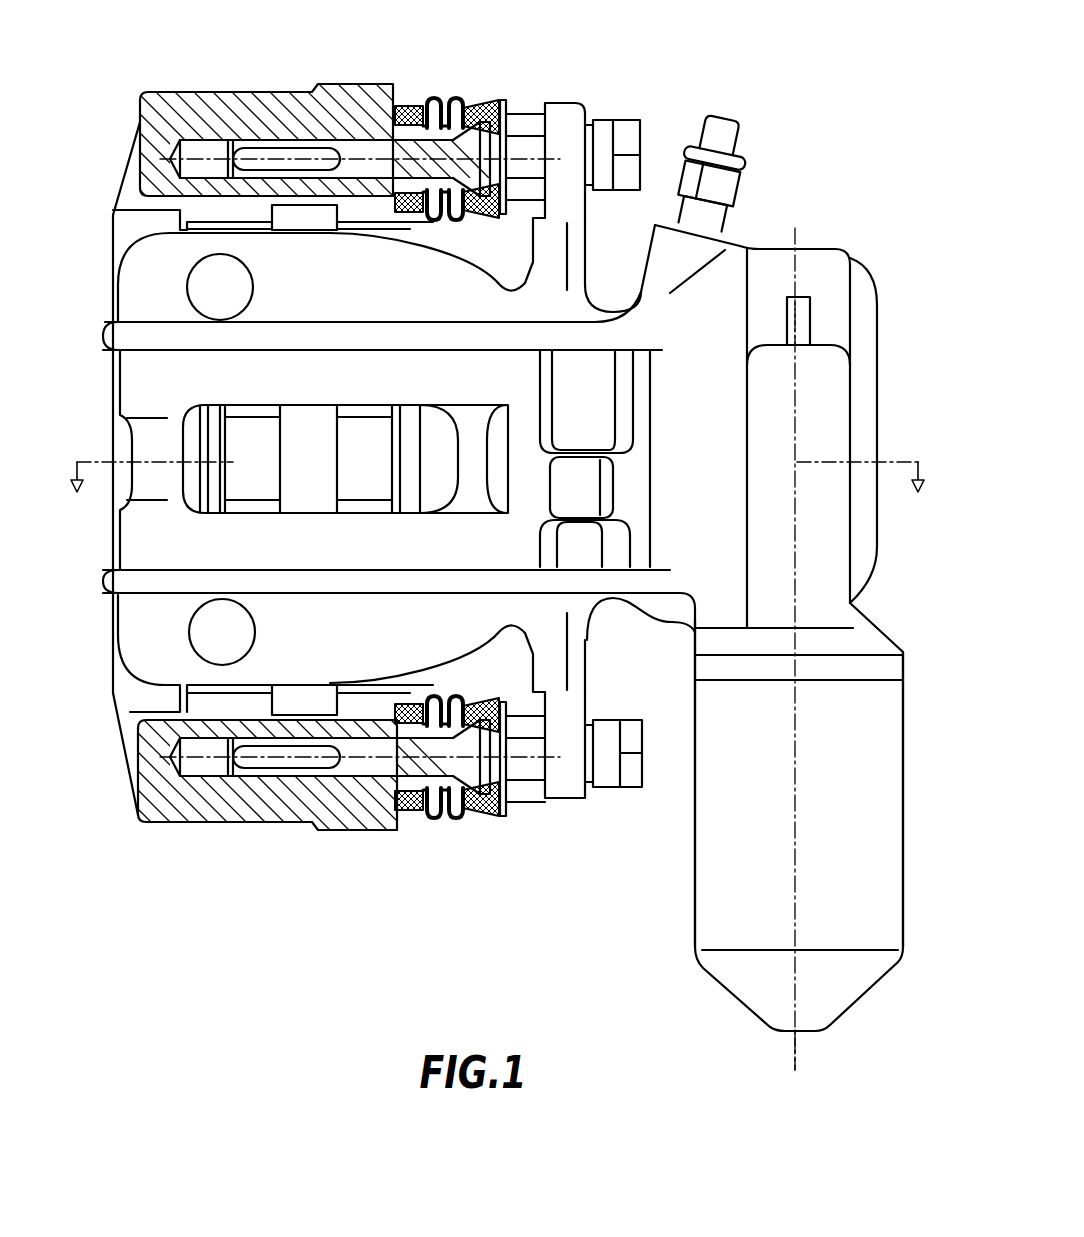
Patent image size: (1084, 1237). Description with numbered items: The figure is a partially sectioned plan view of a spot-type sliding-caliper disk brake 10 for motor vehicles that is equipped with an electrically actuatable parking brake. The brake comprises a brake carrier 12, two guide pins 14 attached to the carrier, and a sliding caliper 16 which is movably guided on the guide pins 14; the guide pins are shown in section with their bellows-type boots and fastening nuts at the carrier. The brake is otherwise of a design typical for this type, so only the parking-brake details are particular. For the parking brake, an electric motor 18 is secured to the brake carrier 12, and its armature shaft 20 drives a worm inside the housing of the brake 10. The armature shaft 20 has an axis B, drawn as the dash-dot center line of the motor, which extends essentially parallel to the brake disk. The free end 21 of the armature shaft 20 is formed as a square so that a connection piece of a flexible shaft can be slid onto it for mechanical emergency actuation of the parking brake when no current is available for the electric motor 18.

The spot-type sliding-caliper disk brake 10 is at (495, 92).
The brake carrier 12 is at (572, 787).
The guide pins 14 is at (332, 86).
The sliding caliper 16 is at (215, 795).
The electric motor 18 is at (750, 850).
The armature shaft 20 is at (800, 337).
The free end of the armature shaft 21 is at (787, 333).
The axis of the armature shaft B is at (794, 1037).